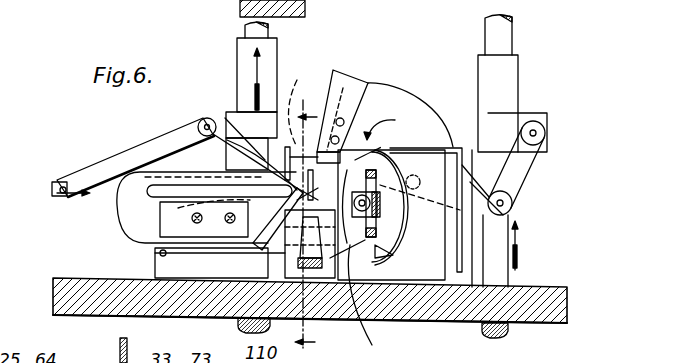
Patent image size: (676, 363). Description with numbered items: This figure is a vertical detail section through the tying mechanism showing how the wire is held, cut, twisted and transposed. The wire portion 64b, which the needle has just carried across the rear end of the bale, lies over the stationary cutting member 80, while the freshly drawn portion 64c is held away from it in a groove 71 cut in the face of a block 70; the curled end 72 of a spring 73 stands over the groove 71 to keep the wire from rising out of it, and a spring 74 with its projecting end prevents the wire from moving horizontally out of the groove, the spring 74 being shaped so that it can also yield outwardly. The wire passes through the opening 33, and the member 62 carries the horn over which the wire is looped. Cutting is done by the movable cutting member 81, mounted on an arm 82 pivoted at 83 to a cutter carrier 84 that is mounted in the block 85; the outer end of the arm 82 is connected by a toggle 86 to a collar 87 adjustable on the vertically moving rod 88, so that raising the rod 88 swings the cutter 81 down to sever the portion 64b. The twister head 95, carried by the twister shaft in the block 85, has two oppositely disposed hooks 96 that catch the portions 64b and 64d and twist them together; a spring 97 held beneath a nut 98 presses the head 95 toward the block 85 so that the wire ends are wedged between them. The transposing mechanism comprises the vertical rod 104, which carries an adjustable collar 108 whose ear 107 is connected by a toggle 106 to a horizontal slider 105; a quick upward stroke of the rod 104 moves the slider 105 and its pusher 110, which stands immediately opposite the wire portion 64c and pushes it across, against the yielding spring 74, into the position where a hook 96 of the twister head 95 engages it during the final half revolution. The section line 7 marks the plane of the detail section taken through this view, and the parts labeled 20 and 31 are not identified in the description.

The vertical rod 104 is at (250, 30).
The adjustable collar 108 is at (267, 67).
The curled end of spring 72 is at (288, 148).
The ear 107 is at (224, 110).
The wire portion 64c is at (200, 124).
The pusher 110 is at (212, 119).
The toggle 106 is at (123, 157).
The horizontal slider 105 is at (110, 183).
The block 70 is at (258, 220).
The spring 73 is at (202, 177).
The plate 20 is at (204, 219).
The groove 71 is at (278, 219).
The spring 74 is at (250, 257).
The aperture 33 is at (304, 106).
The section line 7— 7 is at (307, 223).
The horn-carrying member 62 is at (313, 262).
The movable cutting member 81 is at (342, 113).
The wire portion 64b is at (358, 128).
The cutter arm 82 is at (387, 125).
The block 85 is at (391, 215).
The stationary cutting member 80 is at (429, 193).
The pivot 83 is at (419, 177).
The twister head 95 is at (398, 203).
The nut 98 is at (370, 215).
The hooks 96 is at (370, 168).
The spring 97 is at (360, 245).
The wire 64d is at (374, 304).
The vertically moving rod 88 is at (502, 38).
The collar 87 is at (500, 105).
The toggle 86 is at (518, 172).
The cutter carrier 84 is at (460, 248).
The stop 31 is at (120, 348).